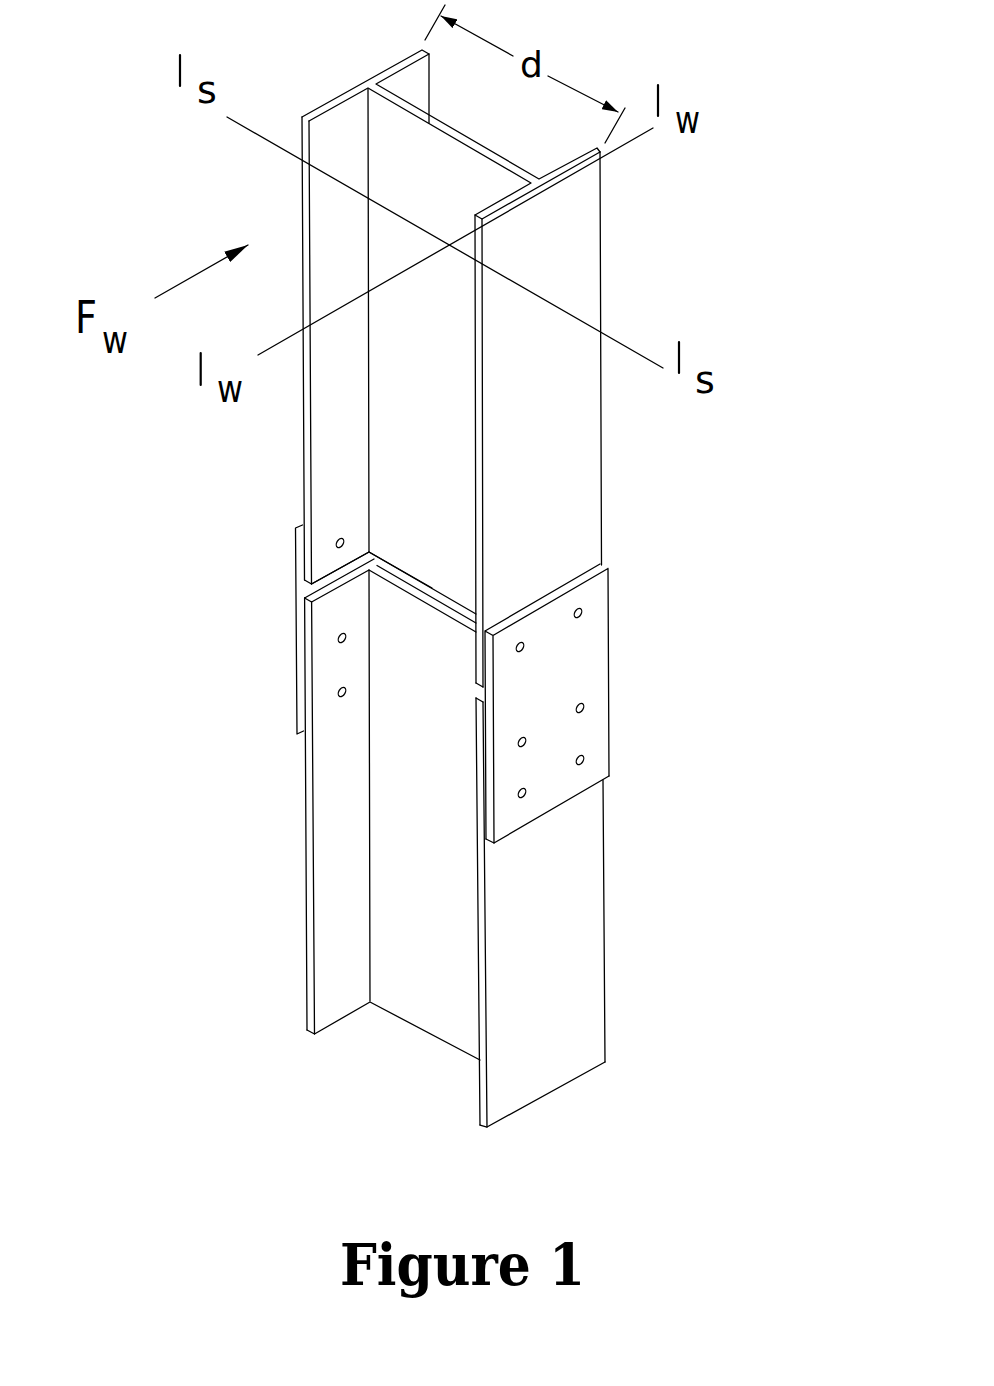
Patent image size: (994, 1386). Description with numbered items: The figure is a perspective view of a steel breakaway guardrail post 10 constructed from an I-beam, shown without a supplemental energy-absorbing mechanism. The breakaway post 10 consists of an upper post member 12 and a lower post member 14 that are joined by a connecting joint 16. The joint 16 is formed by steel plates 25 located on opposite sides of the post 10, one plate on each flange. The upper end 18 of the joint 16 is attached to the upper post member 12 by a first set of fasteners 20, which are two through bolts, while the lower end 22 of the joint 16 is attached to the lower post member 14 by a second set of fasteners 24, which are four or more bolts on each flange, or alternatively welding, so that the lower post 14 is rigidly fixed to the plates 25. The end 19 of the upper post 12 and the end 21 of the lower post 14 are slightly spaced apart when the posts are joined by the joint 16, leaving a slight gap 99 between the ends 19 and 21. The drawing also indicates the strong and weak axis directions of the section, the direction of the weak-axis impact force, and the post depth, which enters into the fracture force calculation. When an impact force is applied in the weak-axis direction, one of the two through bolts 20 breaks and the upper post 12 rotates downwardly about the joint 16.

The breakaway post 10 is at (492, 588).
The upper post member 12 is at (665, 259).
The lower post member 14 is at (578, 940).
The connecting joint 16 is at (464, 701).
The upper end of joint 18 is at (613, 701).
The end of upper post 19 is at (432, 586).
The first set of fasteners 20 is at (530, 640).
The end of lower post 21 is at (436, 613).
The lower end of joint 22 is at (505, 820).
The second set of fasteners 24 is at (587, 718).
The steel plates 25 is at (295, 696).
The gap 99 is at (405, 581).